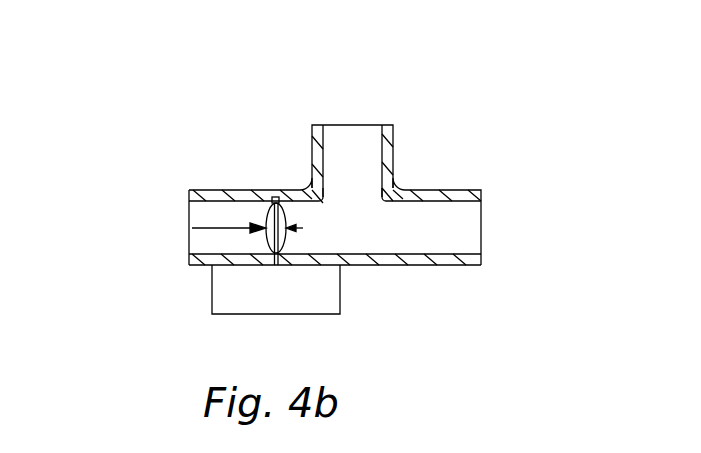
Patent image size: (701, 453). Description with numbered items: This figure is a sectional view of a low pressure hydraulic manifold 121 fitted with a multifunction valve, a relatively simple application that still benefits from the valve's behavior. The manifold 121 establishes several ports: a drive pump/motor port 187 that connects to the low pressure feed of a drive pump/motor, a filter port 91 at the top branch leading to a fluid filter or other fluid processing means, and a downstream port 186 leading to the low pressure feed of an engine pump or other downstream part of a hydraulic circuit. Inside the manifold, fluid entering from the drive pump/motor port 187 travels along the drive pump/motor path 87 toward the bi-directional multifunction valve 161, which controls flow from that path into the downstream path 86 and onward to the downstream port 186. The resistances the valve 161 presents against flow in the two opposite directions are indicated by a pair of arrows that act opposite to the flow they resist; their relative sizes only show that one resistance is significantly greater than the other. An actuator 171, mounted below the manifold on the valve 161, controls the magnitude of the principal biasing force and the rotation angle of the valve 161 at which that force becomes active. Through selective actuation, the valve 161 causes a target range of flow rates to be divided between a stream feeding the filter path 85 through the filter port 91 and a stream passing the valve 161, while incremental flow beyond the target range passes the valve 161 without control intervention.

The manifold 121 is at (240, 100).
The filter port 91 is at (387, 130).
The filter path 85 is at (345, 168).
The drive pump/motor path 87 is at (448, 228).
The drive pump/motor port 187 is at (473, 258).
The downstream path 86 is at (210, 237).
The downstream port 186 is at (188, 265).
The multifunction valve 161 is at (286, 242).
The actuator 171 is at (308, 314).